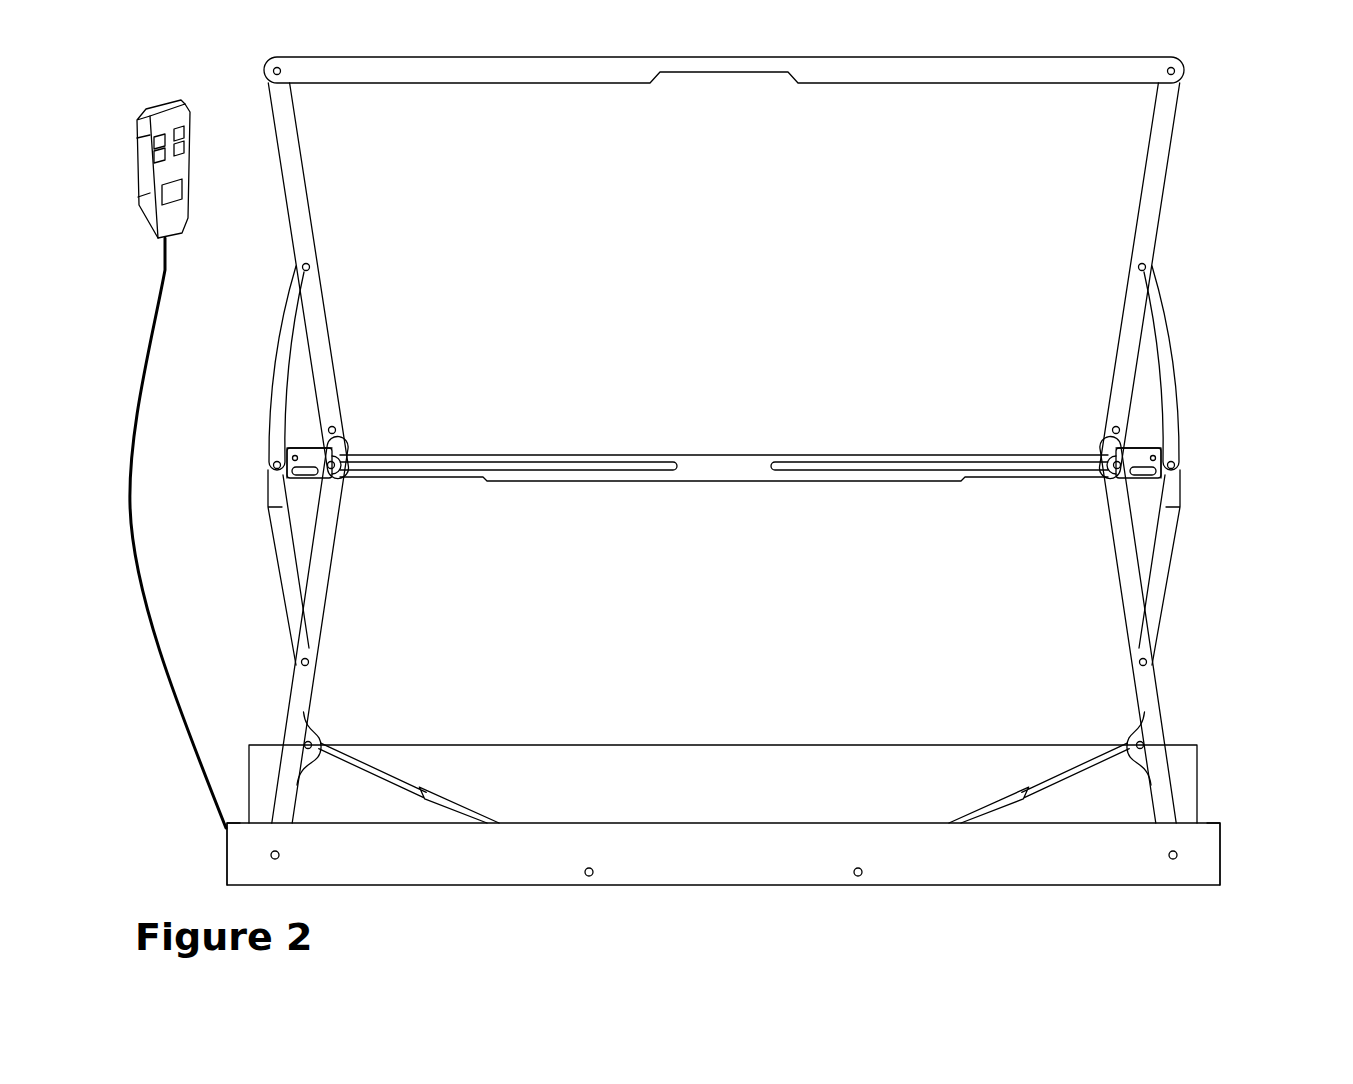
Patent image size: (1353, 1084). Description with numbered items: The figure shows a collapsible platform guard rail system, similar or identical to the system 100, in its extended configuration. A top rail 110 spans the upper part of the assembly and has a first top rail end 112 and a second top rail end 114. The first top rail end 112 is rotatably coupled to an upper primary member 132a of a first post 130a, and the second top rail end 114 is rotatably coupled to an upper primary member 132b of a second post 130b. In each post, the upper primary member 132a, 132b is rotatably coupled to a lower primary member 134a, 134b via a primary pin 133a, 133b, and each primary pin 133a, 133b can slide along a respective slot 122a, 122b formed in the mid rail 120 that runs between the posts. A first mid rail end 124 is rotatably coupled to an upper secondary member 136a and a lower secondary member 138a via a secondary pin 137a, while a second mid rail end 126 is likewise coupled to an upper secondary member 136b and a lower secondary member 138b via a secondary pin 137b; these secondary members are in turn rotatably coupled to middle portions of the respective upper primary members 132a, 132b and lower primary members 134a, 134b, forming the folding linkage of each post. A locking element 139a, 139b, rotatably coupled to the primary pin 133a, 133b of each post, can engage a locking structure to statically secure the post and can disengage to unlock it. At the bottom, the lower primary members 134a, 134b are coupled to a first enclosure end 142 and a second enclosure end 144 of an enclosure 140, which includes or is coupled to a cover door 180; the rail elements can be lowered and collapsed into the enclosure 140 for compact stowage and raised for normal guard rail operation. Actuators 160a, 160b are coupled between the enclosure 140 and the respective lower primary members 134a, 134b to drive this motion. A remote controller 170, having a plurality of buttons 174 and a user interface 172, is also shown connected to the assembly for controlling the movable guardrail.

The system 100 is at (1262, 122).
The top rail 110 is at (724, 96).
The first top rail end 112 is at (316, 84).
The second top rail end 114 is at (1136, 84).
The mid rail 120 is at (722, 491).
The slot 122a is at (611, 467).
The slot 122b is at (887, 468).
The first mid rail end 124 is at (284, 477).
The second mid rail end 126 is at (1158, 478).
The first post 130a is at (368, 382).
The second post 130b is at (1200, 343).
The upper primary member 132a is at (308, 203).
The upper primary member 132b is at (1141, 193).
The primary pin 133a is at (335, 462).
The primary pin 133b is at (1114, 462).
The lower primary member 134a is at (328, 603).
The lower primary member 134b is at (1118, 580).
The upper secondary member 136a is at (283, 358).
The upper secondary member 136b is at (1170, 380).
The secondary pin 137a is at (274, 463).
The secondary pin 137b is at (1173, 463).
The lower secondary member 138a is at (276, 530).
The lower secondary member 138b is at (1172, 560).
The locking element 139a is at (303, 448).
The locking element 139b is at (1143, 450).
The enclosure 140 is at (722, 856).
The first enclosure end 142 is at (226, 829).
The second enclosure end 144 is at (1221, 848).
The actuator 160a is at (473, 808).
The actuator 160b is at (990, 806).
The remote controller 170 is at (144, 439).
The user interface 172 is at (170, 203).
The buttons 174 is at (173, 128).
The cover door 180 is at (653, 745).